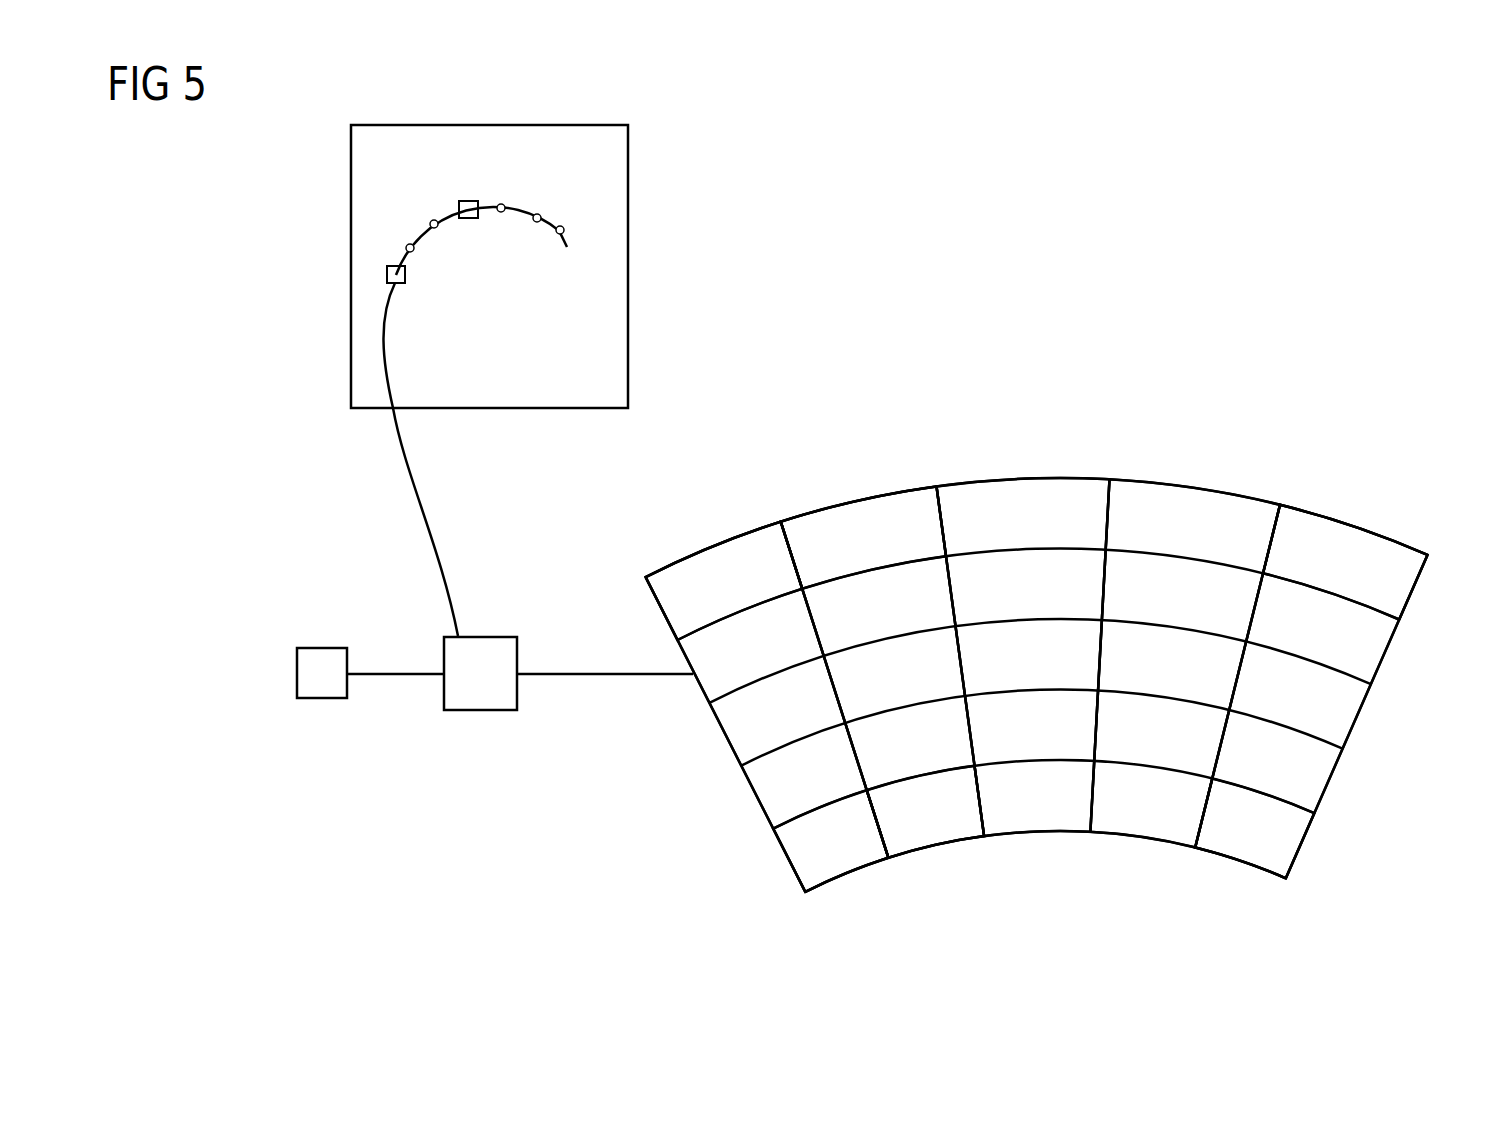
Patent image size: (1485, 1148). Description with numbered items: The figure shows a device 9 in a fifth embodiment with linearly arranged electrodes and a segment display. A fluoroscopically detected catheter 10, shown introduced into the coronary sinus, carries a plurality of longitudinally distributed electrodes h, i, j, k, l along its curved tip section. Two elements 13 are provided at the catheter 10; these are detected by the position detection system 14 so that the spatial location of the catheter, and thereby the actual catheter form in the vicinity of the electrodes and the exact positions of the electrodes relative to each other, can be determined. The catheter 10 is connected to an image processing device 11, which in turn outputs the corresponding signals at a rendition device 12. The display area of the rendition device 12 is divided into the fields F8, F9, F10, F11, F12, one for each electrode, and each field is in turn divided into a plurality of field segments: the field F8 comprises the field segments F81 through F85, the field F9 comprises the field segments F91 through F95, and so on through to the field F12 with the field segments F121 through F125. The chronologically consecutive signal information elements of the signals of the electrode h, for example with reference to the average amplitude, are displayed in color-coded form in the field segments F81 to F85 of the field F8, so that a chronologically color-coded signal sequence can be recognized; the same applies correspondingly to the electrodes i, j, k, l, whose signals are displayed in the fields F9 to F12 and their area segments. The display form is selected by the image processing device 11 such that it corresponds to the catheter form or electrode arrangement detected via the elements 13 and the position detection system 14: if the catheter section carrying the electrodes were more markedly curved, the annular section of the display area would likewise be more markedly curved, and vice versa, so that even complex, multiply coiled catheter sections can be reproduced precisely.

The device 9 is at (806, 306).
The catheter 10 is at (382, 357).
The image processing device 11 is at (473, 710).
The rendition device 12 is at (763, 808).
The elements 13 is at (387, 274).
The position detection system 14 is at (323, 698).
The electrode h is at (406, 247).
The electrode i is at (431, 221).
The electrode j is at (501, 204).
The electrode k is at (537, 214).
The electrode l is at (563, 228).
The field F8 is at (767, 699).
The field F9 is at (882, 658).
The field F10 is at (1023, 638).
The field F11 is at (1185, 647).
The field F12 is at (1311, 682).
The field segment F81 is at (697, 602).
The field segment F85 is at (845, 840).
The field segment F91 is at (918, 515).
The field segment F95 is at (943, 817).
The field segment F121 is at (1400, 562).
The field segment F125 is at (1243, 842).